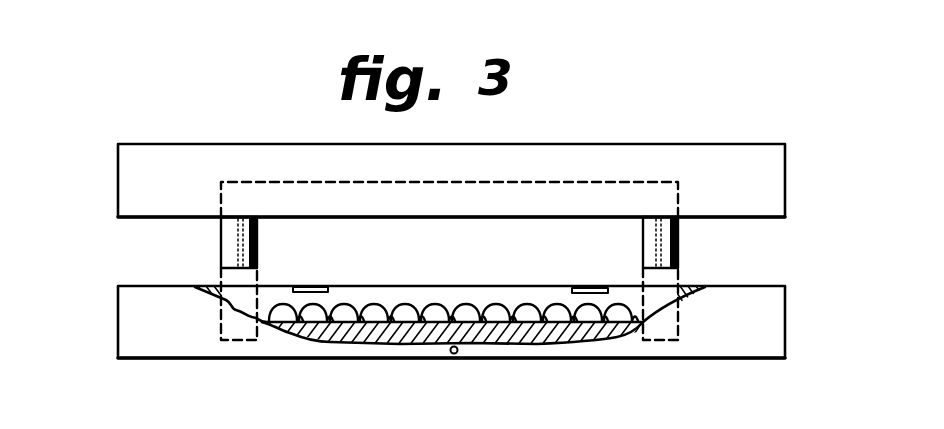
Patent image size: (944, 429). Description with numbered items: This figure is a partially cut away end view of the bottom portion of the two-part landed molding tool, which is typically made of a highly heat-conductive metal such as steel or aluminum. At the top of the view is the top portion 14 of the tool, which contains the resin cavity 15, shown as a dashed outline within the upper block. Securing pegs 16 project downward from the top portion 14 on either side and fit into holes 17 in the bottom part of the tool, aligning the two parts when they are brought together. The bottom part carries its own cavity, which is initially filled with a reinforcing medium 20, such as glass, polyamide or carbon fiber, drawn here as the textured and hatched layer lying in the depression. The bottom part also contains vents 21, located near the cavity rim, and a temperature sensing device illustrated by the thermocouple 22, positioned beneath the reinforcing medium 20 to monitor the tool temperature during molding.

The top portion 14 is at (126, 171).
The resin cavity 15 is at (300, 197).
The securing pegs 16 is at (222, 228).
The holes 17 is at (258, 301).
The reinforcing medium 20 is at (336, 340).
The vents 21 is at (585, 288).
The thermocouple 22 is at (458, 349).